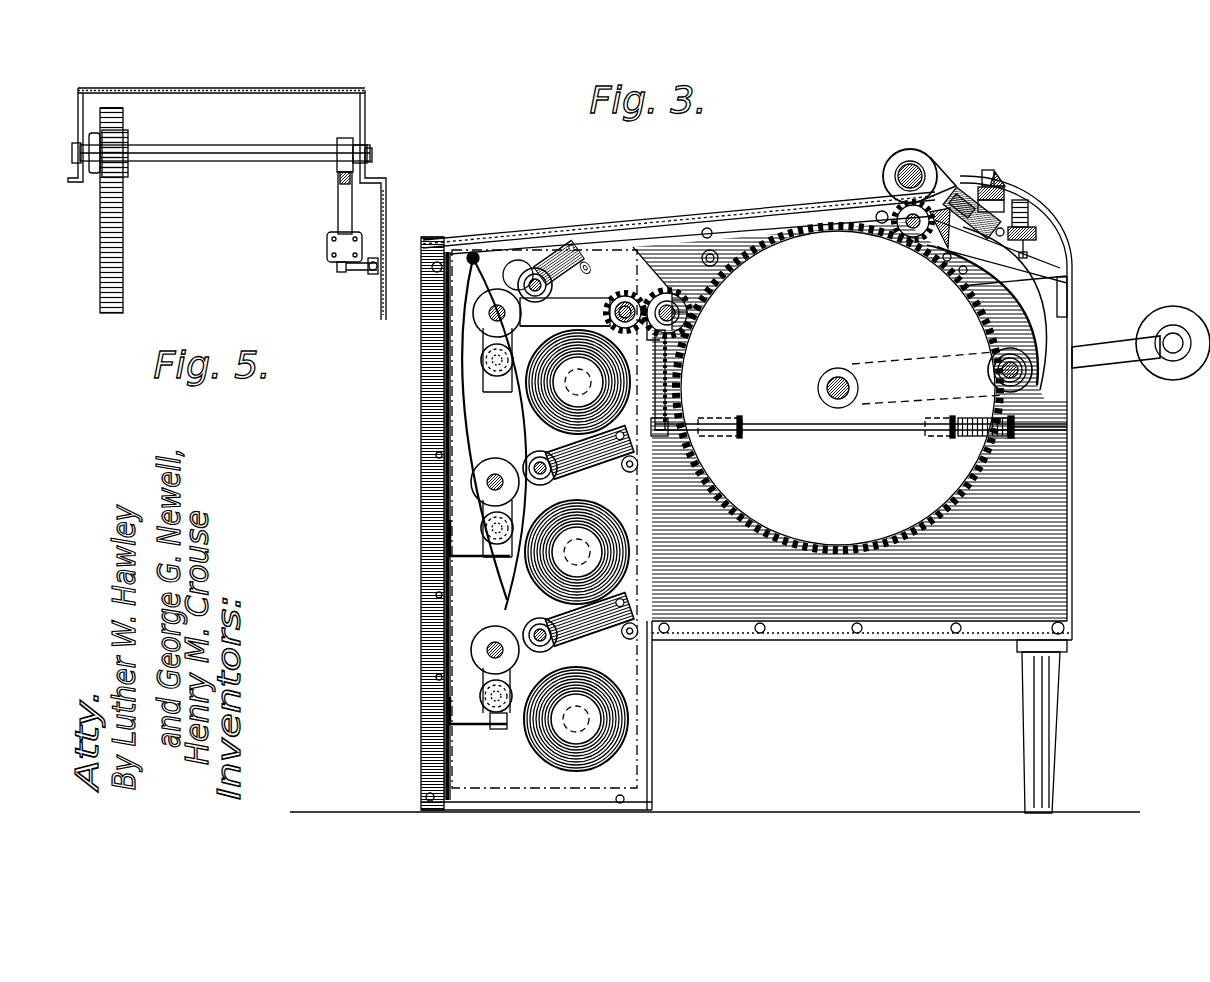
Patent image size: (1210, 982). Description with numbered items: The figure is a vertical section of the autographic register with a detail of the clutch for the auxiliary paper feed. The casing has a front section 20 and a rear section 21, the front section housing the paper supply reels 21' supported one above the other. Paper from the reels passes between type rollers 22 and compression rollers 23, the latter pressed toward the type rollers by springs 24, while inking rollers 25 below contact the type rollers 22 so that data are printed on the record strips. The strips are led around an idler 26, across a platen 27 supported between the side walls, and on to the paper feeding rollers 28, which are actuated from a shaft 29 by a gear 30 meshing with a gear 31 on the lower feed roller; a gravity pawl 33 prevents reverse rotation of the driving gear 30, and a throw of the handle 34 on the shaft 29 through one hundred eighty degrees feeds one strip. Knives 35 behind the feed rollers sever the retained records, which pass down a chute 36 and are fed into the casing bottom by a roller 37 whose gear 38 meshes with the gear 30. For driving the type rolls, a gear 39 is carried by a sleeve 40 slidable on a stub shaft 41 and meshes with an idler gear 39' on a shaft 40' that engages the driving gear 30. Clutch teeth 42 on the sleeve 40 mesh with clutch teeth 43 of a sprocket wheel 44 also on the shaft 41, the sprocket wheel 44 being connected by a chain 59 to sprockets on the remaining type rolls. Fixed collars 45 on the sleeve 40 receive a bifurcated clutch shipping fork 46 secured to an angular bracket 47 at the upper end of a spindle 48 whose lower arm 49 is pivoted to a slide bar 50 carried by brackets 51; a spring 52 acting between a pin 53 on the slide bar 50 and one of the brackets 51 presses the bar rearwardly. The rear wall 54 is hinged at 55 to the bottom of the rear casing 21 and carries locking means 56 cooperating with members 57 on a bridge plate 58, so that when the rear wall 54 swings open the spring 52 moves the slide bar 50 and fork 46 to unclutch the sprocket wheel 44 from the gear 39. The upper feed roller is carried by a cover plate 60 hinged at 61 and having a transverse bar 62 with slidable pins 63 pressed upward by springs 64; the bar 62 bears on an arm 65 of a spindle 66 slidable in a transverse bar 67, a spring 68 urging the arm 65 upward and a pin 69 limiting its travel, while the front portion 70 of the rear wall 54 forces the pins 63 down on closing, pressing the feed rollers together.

In FIG. 3, the front section 20 is at (445, 640).
In FIG. 3, the rear section 21 is at (715, 494).
In FIG. 3, the paper supply reels 21' is at (554, 519).
In FIG. 3, the type rollers 22 is at (474, 318).
In FIG. 3, the compression rollers 23 is at (520, 288).
In FIG. 3, the springs 24 is at (571, 258).
In FIG. 3, the inking rollers 25 is at (481, 365).
In FIG. 3, the idler 26 is at (474, 255).
In FIG. 3, the platen 27 is at (700, 240).
In FIG. 3, the paper feeding rollers 28 is at (940, 222).
In FIG. 3, the shaft 29 is at (832, 380).
In FIG. 3, the gear 30 is at (980, 244).
In FIG. 5, the gear 30 is at (125, 243).
In FIG. 3, the gear 31 is at (998, 180).
In FIG. 3, the gravity pawl 33 is at (718, 237).
In FIG. 3, the handle 34 is at (1108, 346).
In FIG. 3, the knives 35 is at (935, 245).
In FIG. 3, the chute 36 is at (1000, 298).
In FIG. 3, the roller 37 is at (1034, 372).
In FIG. 3, the gear 38 is at (1036, 392).
In FIG. 3, the gear 39 is at (679, 245).
In FIG. 5, the gear 39 is at (141, 123).
In FIG. 3, the idler gear 39' is at (720, 299).
In FIG. 3, the sleeve 40 is at (566, 309).
In FIG. 5, the sleeve 40 is at (227, 204).
In FIG. 3, the shaft 40' is at (724, 280).
In FIG. 3, the stub shaft 41 is at (565, 315).
In FIG. 5, the clutch teeth 42 is at (78, 165).
In FIG. 5, the clutch teeth 43 is at (112, 130).
In FIG. 5, the sprocket wheel 44 is at (93, 133).
In FIG. 3, the collars 45 is at (620, 300).
In FIG. 5, the collars 45 is at (340, 140).
In FIG. 3, the clutch shipping fork 46 is at (630, 292).
In FIG. 5, the clutch shipping fork 46 is at (340, 178).
In FIG. 3, the angular bracket 47 is at (690, 318).
In FIG. 5, the angular bracket 47 is at (343, 195).
In FIG. 3, the spindle 48 is at (668, 360).
In FIG. 5, the spindle 48 is at (338, 268).
In FIG. 3, the arm 49 is at (668, 428).
In FIG. 5, the arm 49 is at (360, 272).
In FIG. 3, the slide bar 50 is at (861, 443).
In FIG. 5, the slide bar 50 is at (374, 274).
In FIG. 3, the brackets 51 is at (741, 432).
In FIG. 5, the brackets 51 is at (327, 246).
In FIG. 3, the spring 52 is at (1012, 440).
In FIG. 3, the pin 53 is at (1000, 432).
In FIG. 3, the rear wall 54 is at (1068, 430).
In FIG. 3, the hinge 55 is at (1066, 626).
In FIG. 3, the locking means 56 is at (1052, 300).
In FIG. 3, the members 57 is at (1064, 278).
In FIG. 3, the bridge plate 58 is at (935, 272).
In FIG. 3, the chain 59 is at (477, 340).
In FIG. 3, the cover plate 60 is at (490, 240).
In FIG. 3, the hinge 61 is at (437, 262).
In FIG. 3, the transverse bar 62 is at (1005, 206).
In FIG. 3, the pins 63 is at (1002, 188).
In FIG. 3, the springs 64 is at (1005, 194).
In FIG. 3, the arm 65 is at (1030, 200).
In FIG. 3, the spindle 66 is at (1029, 212).
In FIG. 3, the transverse bar 67 is at (1037, 234).
In FIG. 3, the spring 68 is at (1030, 224).
In FIG. 3, the pin 69 is at (1026, 250).
In FIG. 3, the front portion 70 is at (987, 175).